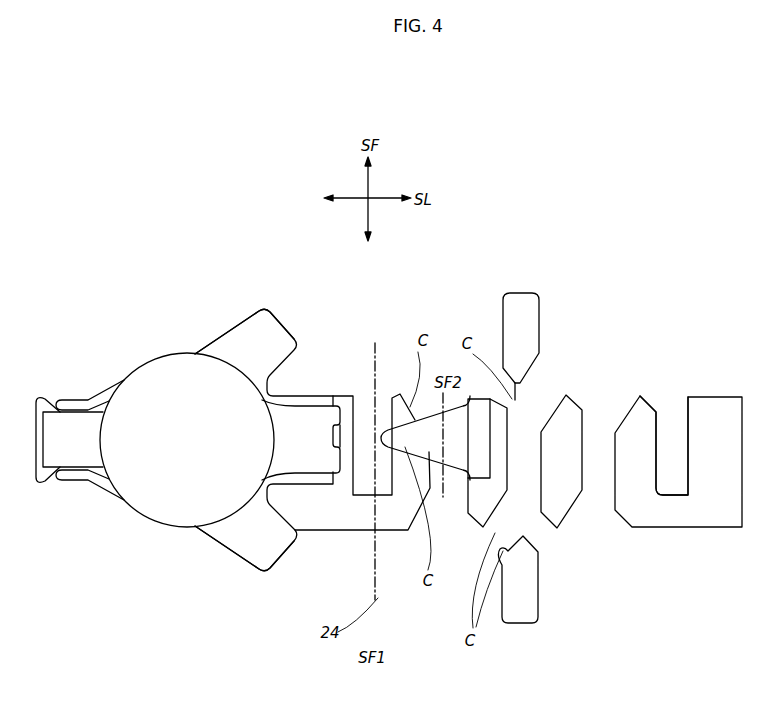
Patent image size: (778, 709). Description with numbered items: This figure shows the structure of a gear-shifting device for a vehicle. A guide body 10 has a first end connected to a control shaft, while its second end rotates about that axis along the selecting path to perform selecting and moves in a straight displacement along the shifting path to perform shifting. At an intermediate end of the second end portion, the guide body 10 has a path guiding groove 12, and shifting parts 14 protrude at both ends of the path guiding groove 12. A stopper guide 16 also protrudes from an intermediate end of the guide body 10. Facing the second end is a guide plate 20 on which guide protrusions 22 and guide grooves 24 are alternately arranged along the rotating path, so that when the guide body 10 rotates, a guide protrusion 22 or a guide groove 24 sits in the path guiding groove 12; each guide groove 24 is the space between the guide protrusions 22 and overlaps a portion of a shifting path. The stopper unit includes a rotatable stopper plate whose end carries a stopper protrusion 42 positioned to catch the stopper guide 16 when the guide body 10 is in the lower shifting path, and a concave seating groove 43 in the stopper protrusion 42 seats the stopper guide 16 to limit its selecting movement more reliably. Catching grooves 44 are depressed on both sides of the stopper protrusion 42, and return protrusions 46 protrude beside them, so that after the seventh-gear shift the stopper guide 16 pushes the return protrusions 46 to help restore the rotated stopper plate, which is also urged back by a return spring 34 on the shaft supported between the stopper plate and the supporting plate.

The guide body 10 is at (509, 425).
The path guiding groove 12 is at (520, 447).
The shifting part 14 is at (530, 326).
The stopper guide 16 is at (420, 500).
The guide plate 20 is at (707, 487).
The guide protrusion 22 is at (400, 387).
The guide groove 24 is at (602, 437).
The return spring 34 is at (80, 399).
The stopper protrusion 42 is at (312, 458).
The seating groove 43 is at (341, 445).
The catching groove 44 is at (313, 433).
The return protrusion 46 is at (260, 332).